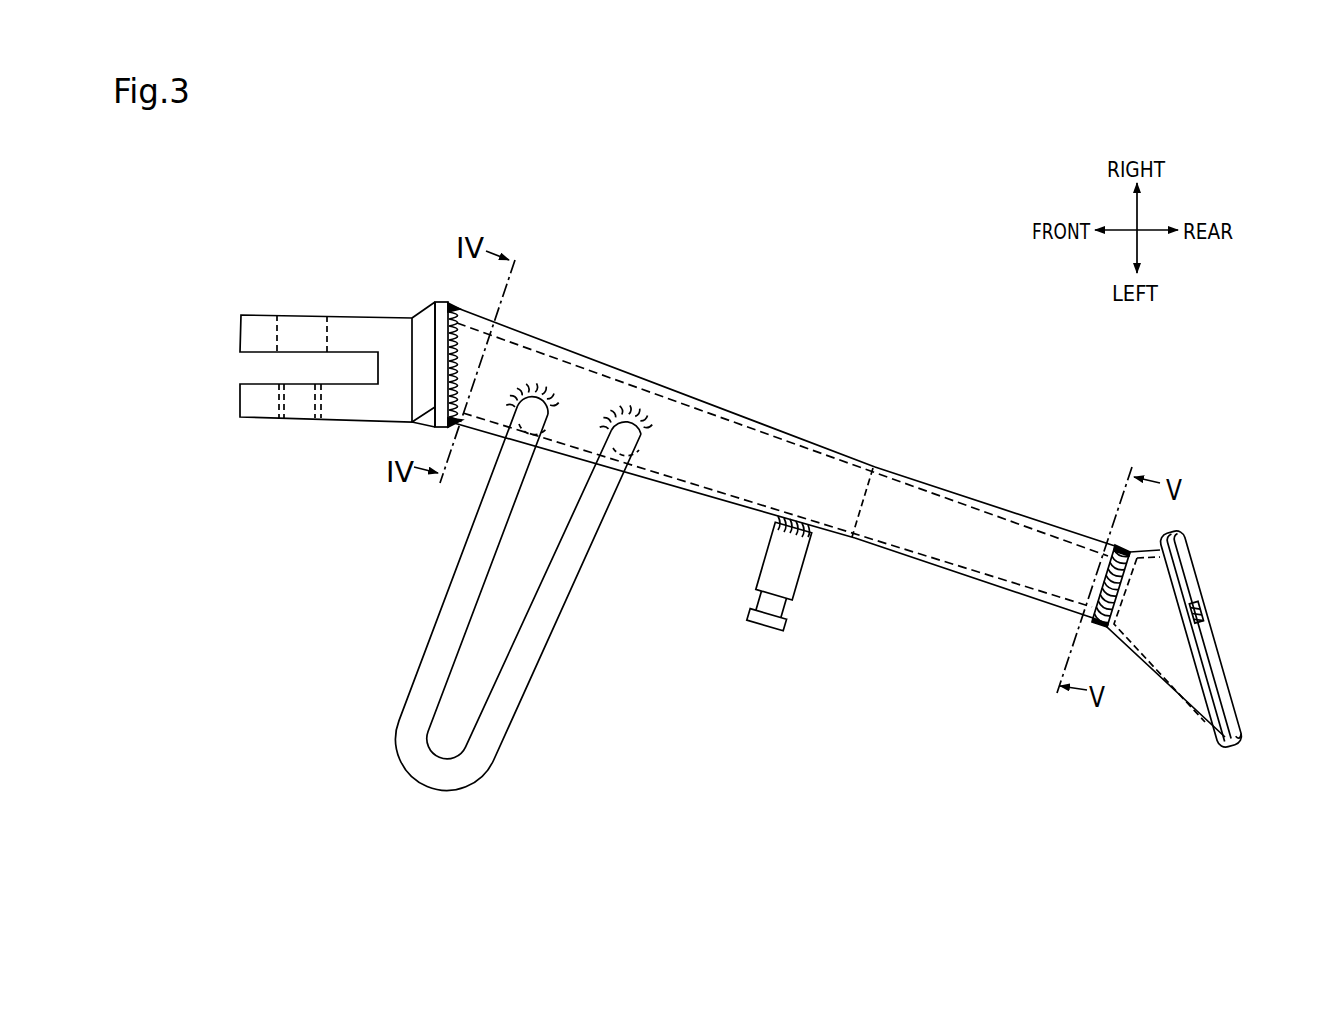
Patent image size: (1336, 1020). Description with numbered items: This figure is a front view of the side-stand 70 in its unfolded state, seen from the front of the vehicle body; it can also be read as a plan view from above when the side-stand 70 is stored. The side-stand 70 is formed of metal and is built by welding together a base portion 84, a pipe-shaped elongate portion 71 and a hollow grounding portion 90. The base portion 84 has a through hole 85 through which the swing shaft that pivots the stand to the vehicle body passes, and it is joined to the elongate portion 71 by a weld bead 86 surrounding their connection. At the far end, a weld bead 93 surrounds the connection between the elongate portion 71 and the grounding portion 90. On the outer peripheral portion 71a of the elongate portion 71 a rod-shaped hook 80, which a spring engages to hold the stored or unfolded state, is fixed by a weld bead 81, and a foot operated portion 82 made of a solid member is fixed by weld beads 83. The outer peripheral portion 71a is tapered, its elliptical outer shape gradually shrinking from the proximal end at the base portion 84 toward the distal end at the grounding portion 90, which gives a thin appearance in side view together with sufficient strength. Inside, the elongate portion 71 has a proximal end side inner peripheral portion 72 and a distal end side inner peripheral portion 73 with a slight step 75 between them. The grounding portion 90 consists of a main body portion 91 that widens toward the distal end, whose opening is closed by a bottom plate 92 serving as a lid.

The side-stand 70 is at (794, 337).
The elongate portion 71 is at (900, 470).
The outer peripheral portion 71a is at (818, 450).
The proximal end side inner peripheral portion 72 is at (760, 431).
The distal end side inner peripheral portion 73 is at (1018, 523).
The step 75 is at (876, 466).
The hook 80 is at (788, 566).
The weld bead 81 is at (775, 526).
The foot operated portion 82 is at (525, 663).
The weld beads 83 is at (548, 395).
The base portion 84 is at (368, 332).
The through hole 85 is at (281, 334).
The weld bead 86 is at (461, 306).
The grounding portion 90 is at (1152, 680).
The main body portion 91 is at (1150, 661).
The bottom plate 92 is at (1210, 633).
The weld bead 93 is at (1130, 552).